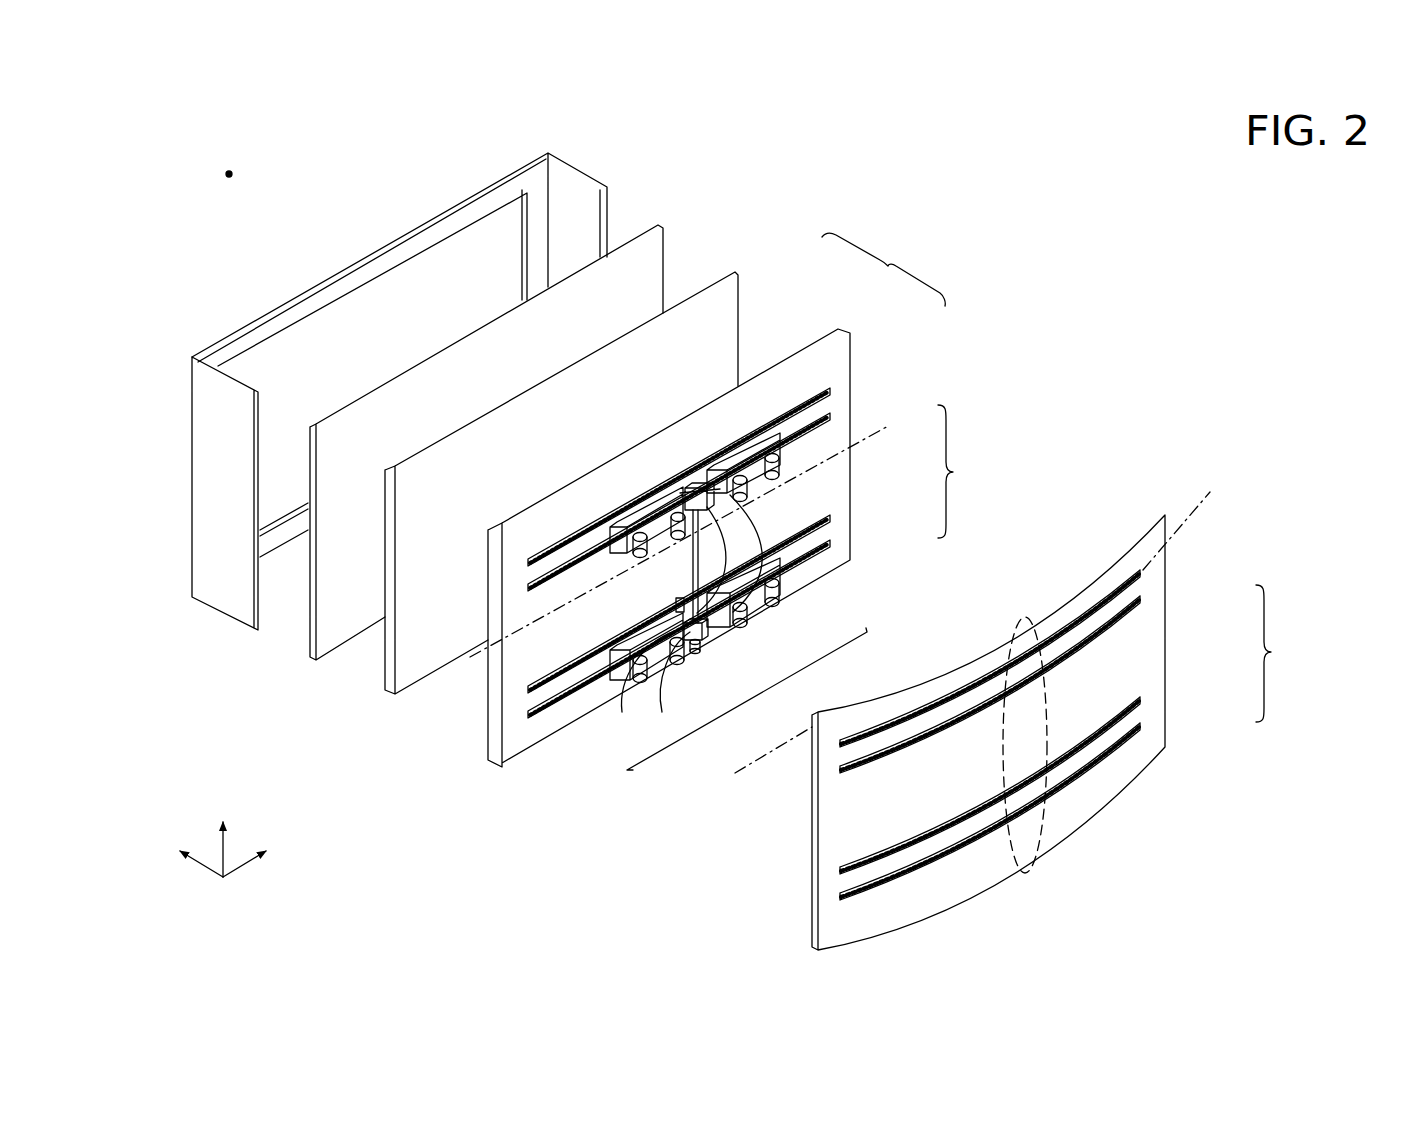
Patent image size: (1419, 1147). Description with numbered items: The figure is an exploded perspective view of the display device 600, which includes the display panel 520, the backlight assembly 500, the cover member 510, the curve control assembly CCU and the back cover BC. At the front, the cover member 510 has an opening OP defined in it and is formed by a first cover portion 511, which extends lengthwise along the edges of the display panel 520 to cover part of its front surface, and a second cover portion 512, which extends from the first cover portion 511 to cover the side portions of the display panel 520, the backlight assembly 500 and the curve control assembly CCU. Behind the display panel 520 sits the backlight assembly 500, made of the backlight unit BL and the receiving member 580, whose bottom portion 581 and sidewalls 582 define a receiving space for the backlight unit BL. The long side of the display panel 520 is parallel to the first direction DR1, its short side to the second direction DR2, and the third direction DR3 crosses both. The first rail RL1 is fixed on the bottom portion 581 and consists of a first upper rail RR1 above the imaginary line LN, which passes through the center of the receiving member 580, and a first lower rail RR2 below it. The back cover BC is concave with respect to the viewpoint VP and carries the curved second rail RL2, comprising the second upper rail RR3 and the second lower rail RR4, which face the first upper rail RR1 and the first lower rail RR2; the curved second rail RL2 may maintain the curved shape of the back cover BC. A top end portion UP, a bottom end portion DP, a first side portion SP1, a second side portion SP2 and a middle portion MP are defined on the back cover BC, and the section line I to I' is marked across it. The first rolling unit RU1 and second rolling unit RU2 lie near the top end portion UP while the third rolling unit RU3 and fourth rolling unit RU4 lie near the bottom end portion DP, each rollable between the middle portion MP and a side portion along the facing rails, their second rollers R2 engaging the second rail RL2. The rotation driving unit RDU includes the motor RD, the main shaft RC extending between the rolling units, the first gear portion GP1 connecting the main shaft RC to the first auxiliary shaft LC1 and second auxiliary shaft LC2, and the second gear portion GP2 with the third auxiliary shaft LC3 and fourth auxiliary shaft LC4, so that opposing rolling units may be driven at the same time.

The cover member 510 is at (509, 90).
The first cover portion 511 is at (480, 208).
The second cover portion 512 is at (567, 203).
The opening OP is at (411, 304).
The viewpoint VP is at (229, 161).
The display panel 520 is at (643, 273).
The backlight unit BL is at (722, 320).
The backlight assembly 500 is at (883, 269).
The display device 600 is at (1048, 192).
The receiving member 580 is at (837, 367).
The sidewall 582 is at (515, 738).
The bottom portion 581 is at (538, 757).
The imaginary line LN is at (477, 666).
The first upper rail RR1 is at (833, 426).
The first lower rail RR2 is at (834, 549).
The first rail RL1 is at (964, 471).
The first rolling unit RU1 is at (617, 556).
The second rolling unit RU2 is at (759, 490).
The third rolling unit RU3 is at (616, 679).
The fourth rolling unit RU4 is at (784, 586).
The second roller R2 is at (772, 456).
The motor RD is at (697, 637).
The main shaft RC is at (700, 647).
The first gear portion GP1 is at (680, 615).
The second gear portion GP2 is at (705, 642).
The first auxiliary shaft LC1 is at (655, 660).
The second auxiliary shaft LC2 is at (740, 610).
The third auxiliary shaft LC3 is at (710, 643).
The fourth auxiliary shaft LC4 is at (710, 617).
The rotation driving unit RDU is at (737, 712).
The curve control assembly CCU is at (673, 784).
The first direction DR1 is at (265, 858).
The second direction DR2 is at (223, 835).
The third direction DR3 is at (181, 858).
The section line I is at (773, 769).
The section line I' is at (1200, 530).
The bottom end portion DP is at (1105, 808).
The top end portion UP is at (1073, 598).
The back cover BC is at (840, 820).
The first side portion SP1 is at (815, 886).
The second side portion SP2 is at (1168, 568).
The middle portion MP is at (1033, 863).
The second upper rail RR3 is at (1146, 600).
The second lower rail RR4 is at (1146, 726).
The second rail RL2 is at (1281, 653).